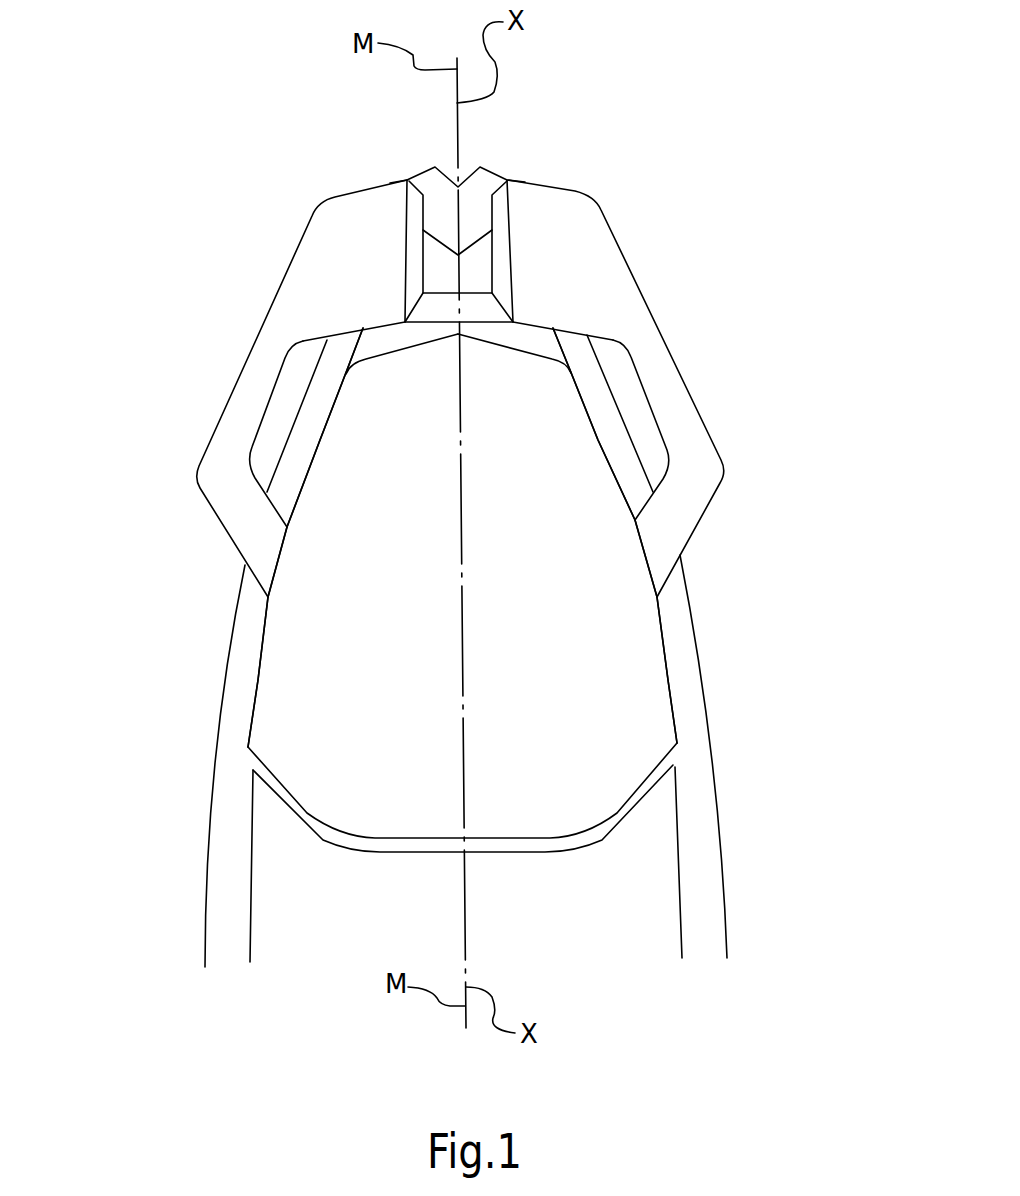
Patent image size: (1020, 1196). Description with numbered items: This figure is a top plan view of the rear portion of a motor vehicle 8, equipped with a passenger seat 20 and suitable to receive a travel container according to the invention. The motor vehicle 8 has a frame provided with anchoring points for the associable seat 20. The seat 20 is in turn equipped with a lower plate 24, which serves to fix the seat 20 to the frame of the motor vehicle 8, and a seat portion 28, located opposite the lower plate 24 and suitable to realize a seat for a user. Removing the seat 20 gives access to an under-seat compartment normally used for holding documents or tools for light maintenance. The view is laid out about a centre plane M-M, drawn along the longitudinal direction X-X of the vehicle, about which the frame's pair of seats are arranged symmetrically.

The motor vehicle 8 is at (517, 567).
The seat 20 is at (368, 645).
The seat portion 28 is at (502, 461).
The lower plate 24 is at (564, 821).